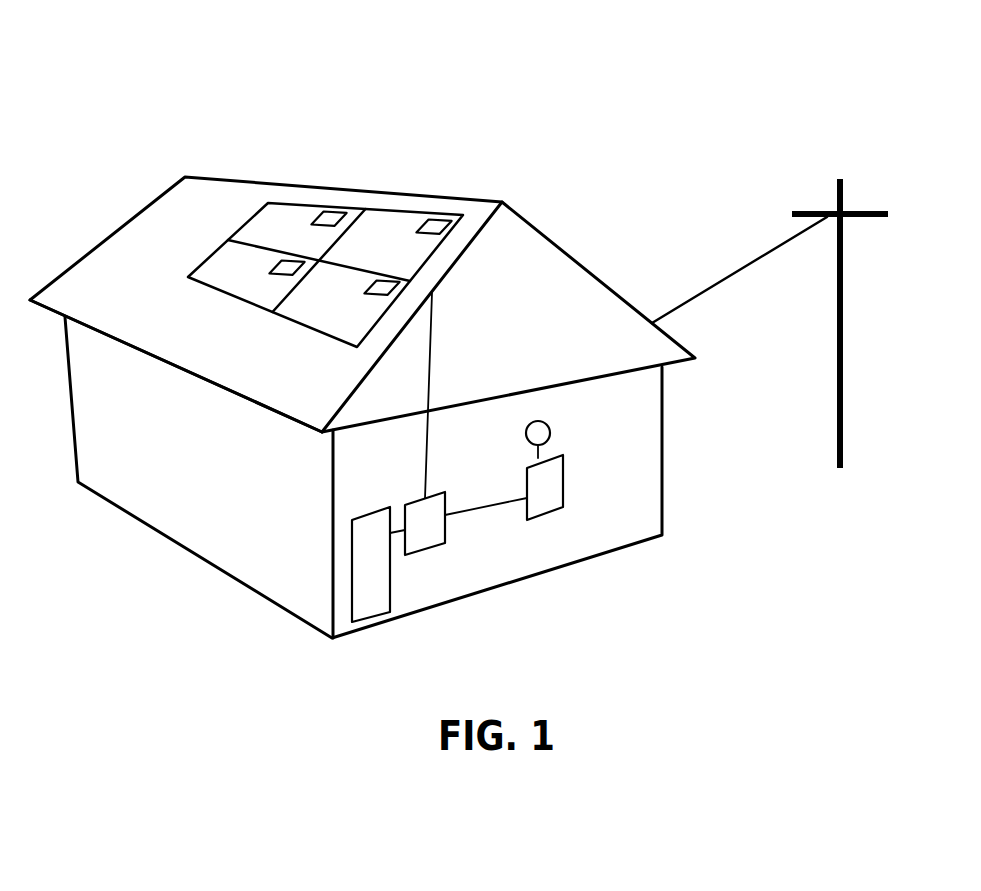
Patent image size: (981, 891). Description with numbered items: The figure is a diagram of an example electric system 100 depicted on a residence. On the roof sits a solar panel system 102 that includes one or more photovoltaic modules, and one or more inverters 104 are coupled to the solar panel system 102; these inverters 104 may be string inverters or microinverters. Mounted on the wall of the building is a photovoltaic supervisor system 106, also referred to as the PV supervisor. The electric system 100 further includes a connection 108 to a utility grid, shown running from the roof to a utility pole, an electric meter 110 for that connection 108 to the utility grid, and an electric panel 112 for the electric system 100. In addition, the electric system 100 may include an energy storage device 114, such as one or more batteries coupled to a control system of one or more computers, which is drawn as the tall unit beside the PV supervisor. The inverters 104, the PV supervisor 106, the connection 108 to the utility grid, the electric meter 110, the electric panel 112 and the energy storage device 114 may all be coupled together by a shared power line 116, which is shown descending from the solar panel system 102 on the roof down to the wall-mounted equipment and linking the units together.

The electric system 100 is at (360, 61).
The solar panel system 102 is at (240, 228).
The inverters 104 is at (320, 212).
The photovoltaic supervisor system 106 is at (435, 488).
The connection to a utility grid 108 is at (763, 258).
The electric meter 110 is at (552, 428).
The electric panel 112 is at (565, 477).
The energy storage device 114 is at (392, 570).
The shared power line 116 is at (432, 383).